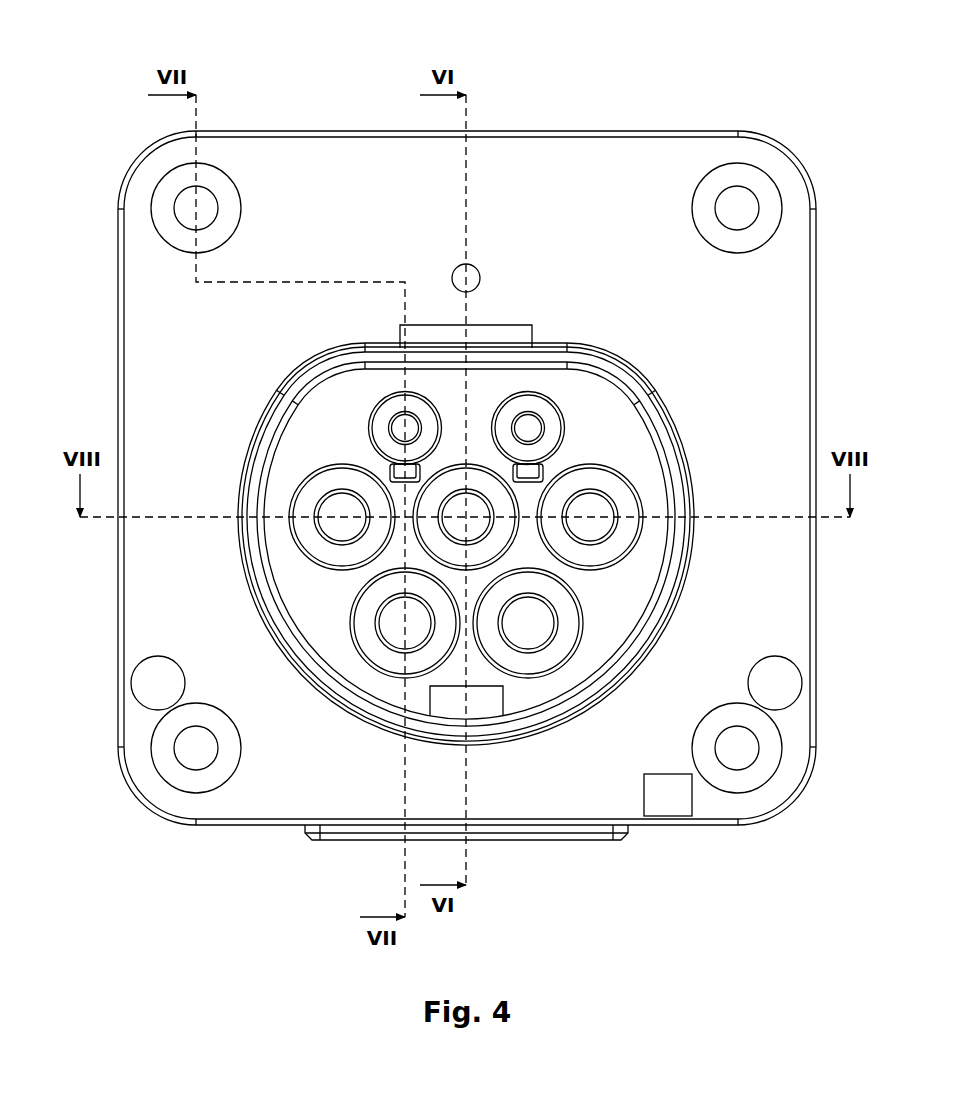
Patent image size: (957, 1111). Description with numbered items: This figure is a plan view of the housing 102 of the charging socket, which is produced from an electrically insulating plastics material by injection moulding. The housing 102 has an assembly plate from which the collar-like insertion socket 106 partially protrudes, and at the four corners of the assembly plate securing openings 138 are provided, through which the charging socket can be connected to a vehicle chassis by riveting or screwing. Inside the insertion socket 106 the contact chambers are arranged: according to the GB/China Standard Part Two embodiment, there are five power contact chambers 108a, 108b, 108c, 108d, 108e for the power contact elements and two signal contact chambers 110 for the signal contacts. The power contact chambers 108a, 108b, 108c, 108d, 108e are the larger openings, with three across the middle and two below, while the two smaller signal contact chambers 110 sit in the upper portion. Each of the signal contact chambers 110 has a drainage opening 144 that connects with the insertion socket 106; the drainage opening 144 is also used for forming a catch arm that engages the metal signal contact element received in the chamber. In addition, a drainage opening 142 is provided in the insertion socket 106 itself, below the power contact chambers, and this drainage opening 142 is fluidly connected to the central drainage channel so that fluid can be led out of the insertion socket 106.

The housing 102 is at (133, 47).
The insertion socket 106 is at (650, 634).
The power contact chamber 108a is at (628, 510).
The power contact chamber 108b is at (548, 658).
The power contact chamber 108c is at (472, 478).
The power contact chamber 108d is at (370, 643).
The power contact chamber 108e is at (323, 482).
The signal contact chamber 110 is at (547, 412).
The securing opening 138 is at (203, 216).
The drainage opening 142 is at (483, 703).
The drainage opening 144 is at (540, 473).